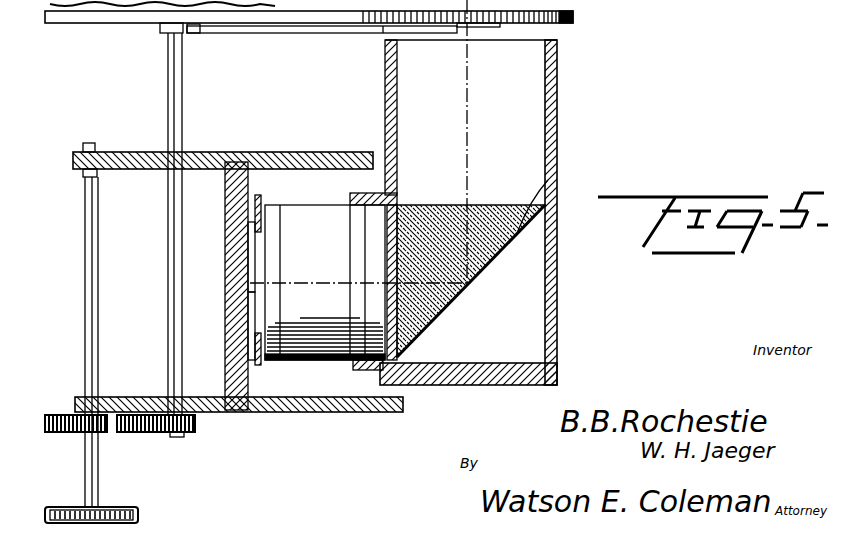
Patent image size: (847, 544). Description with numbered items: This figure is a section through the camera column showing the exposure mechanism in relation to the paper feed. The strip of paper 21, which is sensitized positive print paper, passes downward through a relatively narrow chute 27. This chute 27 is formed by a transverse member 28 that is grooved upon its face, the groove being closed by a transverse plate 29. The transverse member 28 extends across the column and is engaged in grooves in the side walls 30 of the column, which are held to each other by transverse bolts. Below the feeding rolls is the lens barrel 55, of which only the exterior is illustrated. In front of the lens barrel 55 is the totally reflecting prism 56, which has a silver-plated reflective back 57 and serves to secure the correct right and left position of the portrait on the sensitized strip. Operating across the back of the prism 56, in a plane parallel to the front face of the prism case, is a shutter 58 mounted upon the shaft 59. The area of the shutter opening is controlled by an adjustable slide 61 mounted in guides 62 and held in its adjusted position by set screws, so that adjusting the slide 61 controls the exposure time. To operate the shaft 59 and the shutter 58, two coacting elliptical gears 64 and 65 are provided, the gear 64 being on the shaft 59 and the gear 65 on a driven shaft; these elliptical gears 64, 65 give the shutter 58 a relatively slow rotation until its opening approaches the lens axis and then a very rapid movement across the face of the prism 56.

The strip of paper 21 is at (247, 272).
The chute 27 is at (244, 307).
The transverse member 28 is at (233, 255).
The transverse plate 29 is at (259, 363).
The side walls 30 is at (303, 150).
The lens barrel 55 is at (325, 282).
The totally reflecting prism 56 is at (557, 176).
The silver-plated reflective back 57 is at (493, 247).
The shutter 58 is at (353, 15).
The shaft 59 is at (173, 85).
The adjustable slide 61 is at (287, 32).
The guides 62 is at (383, 32).
The elliptical gear 64 is at (153, 433).
The elliptical gear 65 is at (65, 432).